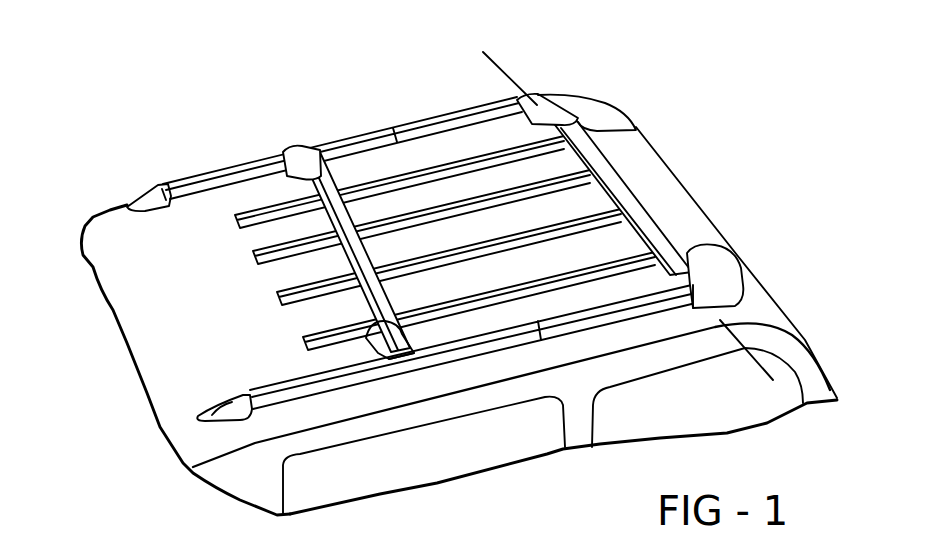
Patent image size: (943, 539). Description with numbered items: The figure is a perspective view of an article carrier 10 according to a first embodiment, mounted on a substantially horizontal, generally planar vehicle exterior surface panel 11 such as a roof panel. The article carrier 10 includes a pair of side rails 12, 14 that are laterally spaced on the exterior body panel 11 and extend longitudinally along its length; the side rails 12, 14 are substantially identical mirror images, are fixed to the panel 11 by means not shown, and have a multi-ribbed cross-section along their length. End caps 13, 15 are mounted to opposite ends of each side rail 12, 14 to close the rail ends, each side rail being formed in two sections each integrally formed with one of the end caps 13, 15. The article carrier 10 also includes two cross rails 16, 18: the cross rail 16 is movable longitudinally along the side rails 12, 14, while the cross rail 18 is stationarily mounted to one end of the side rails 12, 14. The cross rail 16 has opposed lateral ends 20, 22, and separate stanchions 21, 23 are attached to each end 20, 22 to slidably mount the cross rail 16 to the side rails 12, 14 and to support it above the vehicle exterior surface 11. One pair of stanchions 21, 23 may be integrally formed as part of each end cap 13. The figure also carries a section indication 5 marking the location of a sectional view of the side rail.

The section line 5- 5 is at (528, 66).
The article carrier 10 is at (475, 248).
The vehicle exterior surface panel 11 is at (690, 208).
The side rail 12 is at (443, 353).
The end cap 13 is at (575, 97).
The side rail 14 is at (357, 133).
The end cap 15 is at (131, 198).
The cross rail 16 is at (320, 190).
The cross rail 18 is at (625, 183).
The lateral end 20 is at (385, 335).
The stanchion 21 is at (412, 355).
The lateral end 22 is at (303, 163).
The stanchion 23 is at (283, 153).